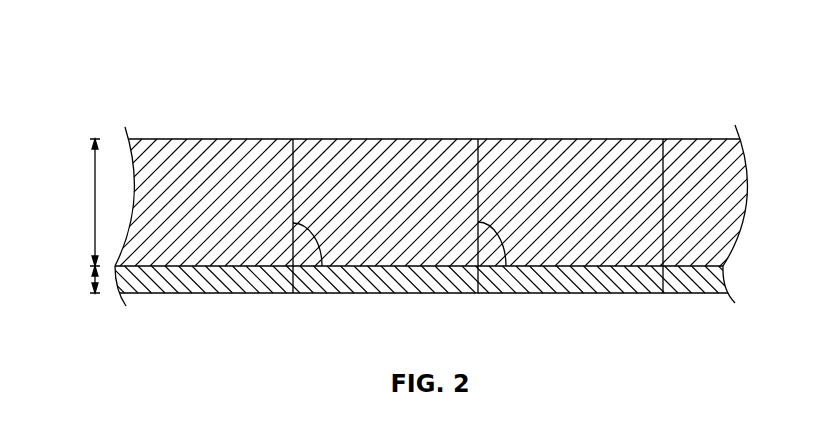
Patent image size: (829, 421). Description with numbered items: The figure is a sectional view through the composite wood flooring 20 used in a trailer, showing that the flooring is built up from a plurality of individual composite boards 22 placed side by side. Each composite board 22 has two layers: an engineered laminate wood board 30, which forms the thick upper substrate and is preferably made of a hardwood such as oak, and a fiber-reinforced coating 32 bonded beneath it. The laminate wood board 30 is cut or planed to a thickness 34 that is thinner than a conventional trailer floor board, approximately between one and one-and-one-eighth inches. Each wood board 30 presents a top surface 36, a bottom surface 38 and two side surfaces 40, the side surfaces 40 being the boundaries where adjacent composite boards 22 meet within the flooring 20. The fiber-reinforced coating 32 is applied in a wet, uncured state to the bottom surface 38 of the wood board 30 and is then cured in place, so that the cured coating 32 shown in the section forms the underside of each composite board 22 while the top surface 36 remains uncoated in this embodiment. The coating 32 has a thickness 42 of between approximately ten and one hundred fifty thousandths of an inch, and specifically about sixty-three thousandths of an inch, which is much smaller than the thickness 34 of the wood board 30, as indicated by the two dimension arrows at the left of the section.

The composite wood flooring 20 is at (720, 43).
The composite board 22 is at (242, 140).
The laminate wood board 30 is at (202, 152).
The fiber-reinforced coating 32 is at (227, 283).
The thickness 34 is at (95, 205).
The top surface 36 is at (160, 140).
The bottom surface 38 is at (172, 271).
The side surfaces 40 is at (322, 266).
The thickness 42 is at (95, 280).